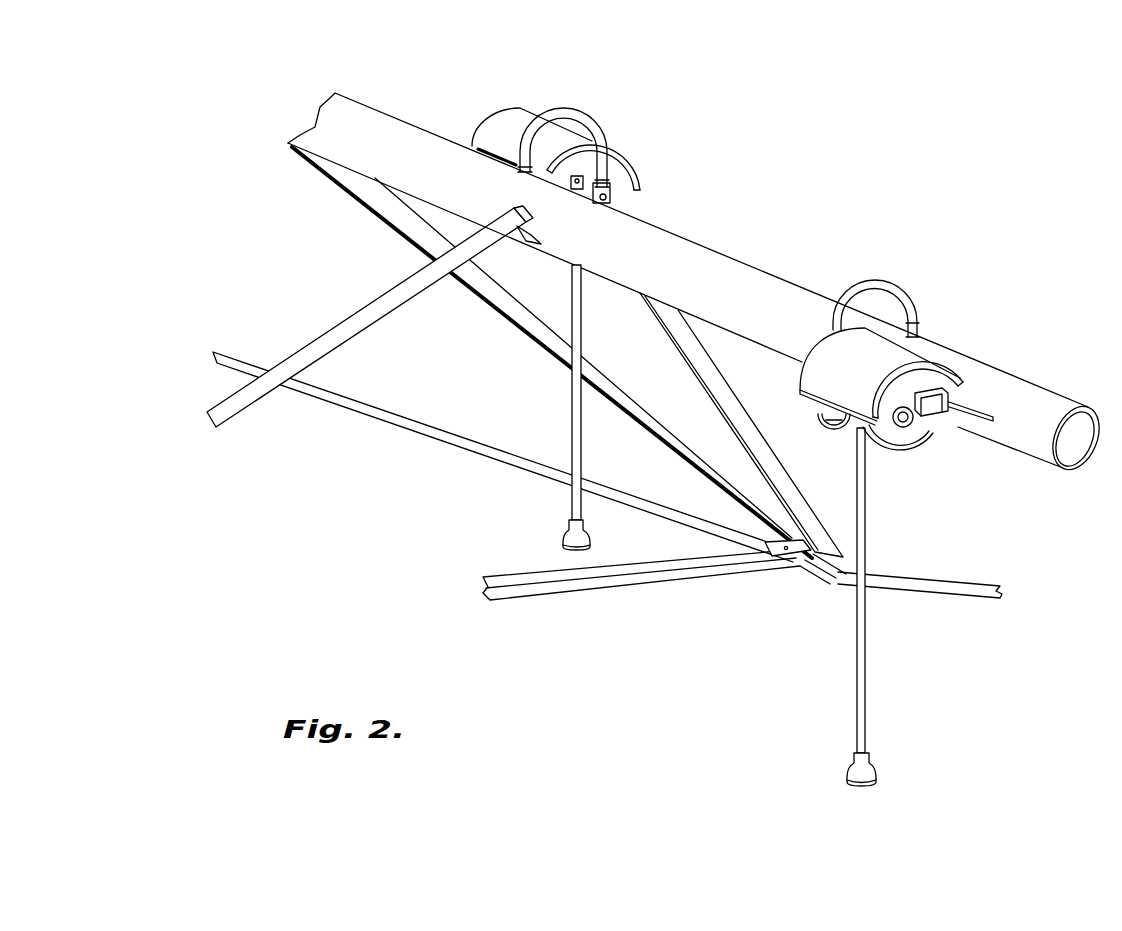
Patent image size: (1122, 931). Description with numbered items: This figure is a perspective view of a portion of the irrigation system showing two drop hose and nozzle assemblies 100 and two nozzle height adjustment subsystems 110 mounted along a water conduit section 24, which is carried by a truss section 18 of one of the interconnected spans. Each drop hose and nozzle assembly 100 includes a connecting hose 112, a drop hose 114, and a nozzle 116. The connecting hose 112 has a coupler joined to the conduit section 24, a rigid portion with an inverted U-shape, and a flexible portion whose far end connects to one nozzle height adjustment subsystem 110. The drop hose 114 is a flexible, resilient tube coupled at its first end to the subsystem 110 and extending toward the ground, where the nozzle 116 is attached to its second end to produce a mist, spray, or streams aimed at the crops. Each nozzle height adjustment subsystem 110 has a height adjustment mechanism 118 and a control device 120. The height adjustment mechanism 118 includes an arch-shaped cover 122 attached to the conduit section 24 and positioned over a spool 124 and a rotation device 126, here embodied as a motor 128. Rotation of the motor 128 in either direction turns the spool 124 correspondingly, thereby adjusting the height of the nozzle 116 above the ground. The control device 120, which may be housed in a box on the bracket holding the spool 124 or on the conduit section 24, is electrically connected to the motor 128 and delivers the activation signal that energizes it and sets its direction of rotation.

The truss section 18 is at (733, 598).
The conduit section 24 is at (348, 110).
The drop hose and nozzle assembly 100 is at (769, 298).
The nozzle height adjustment subsystem 110 is at (769, 298).
The connecting hose 112 is at (563, 102).
The drop hose 114 is at (577, 425).
The nozzle 116 is at (572, 538).
The height adjustment mechanism 118 is at (650, 160).
The control device 120 is at (953, 433).
The cover 122 is at (510, 120).
The spool 124 is at (640, 209).
The rotation device 126 is at (987, 467).
The motor 128 is at (912, 452).